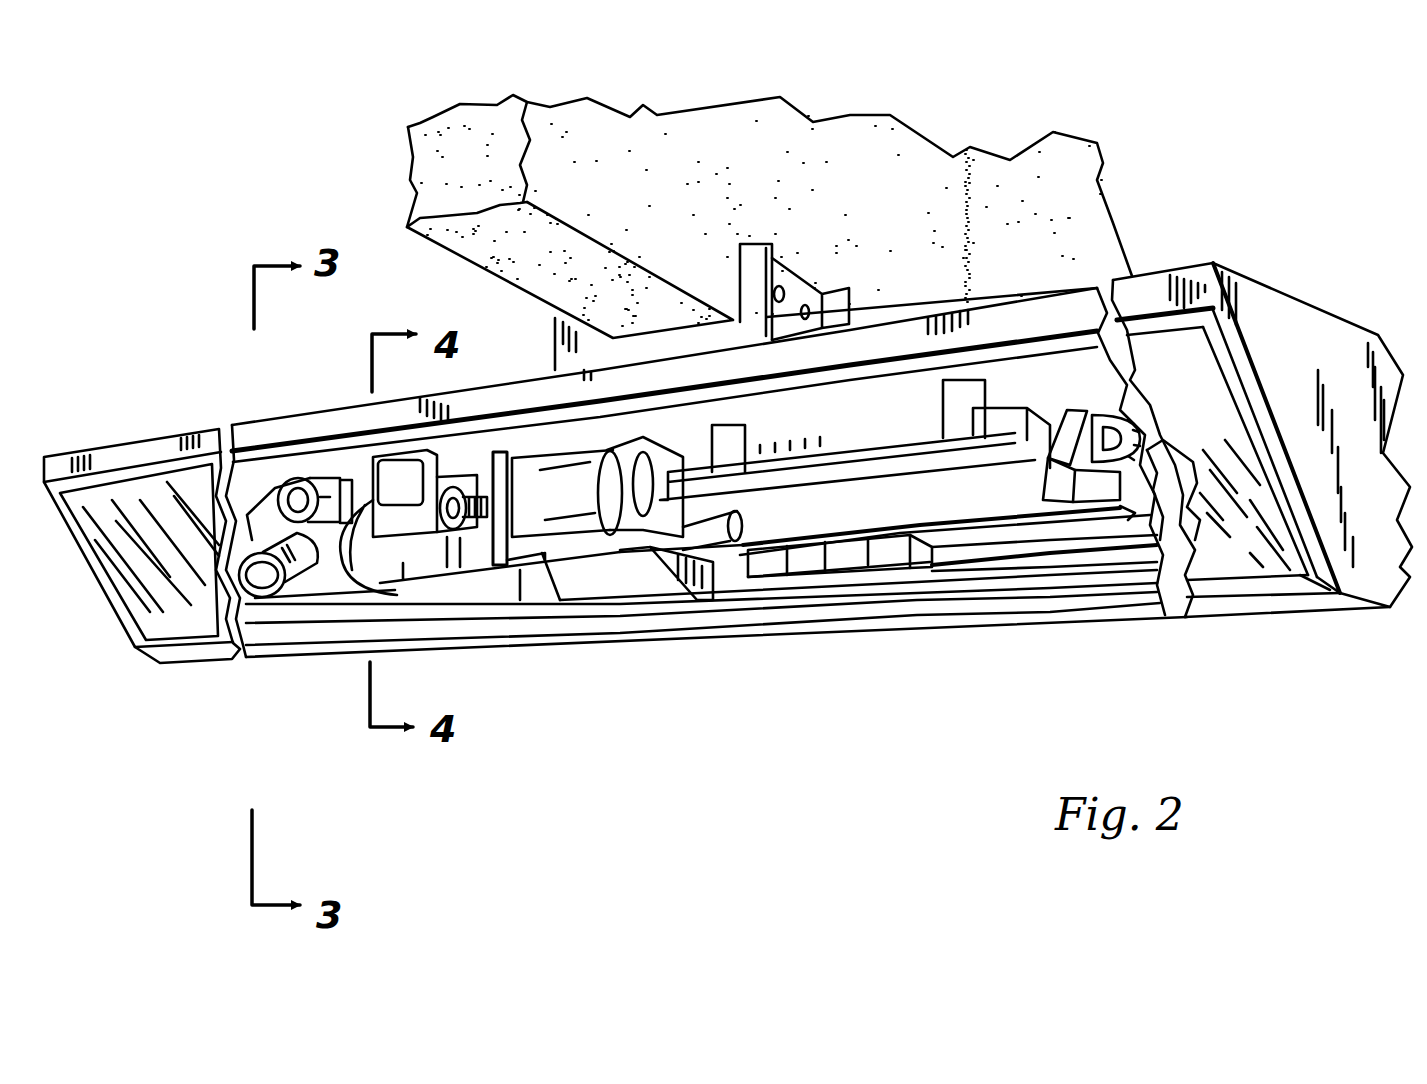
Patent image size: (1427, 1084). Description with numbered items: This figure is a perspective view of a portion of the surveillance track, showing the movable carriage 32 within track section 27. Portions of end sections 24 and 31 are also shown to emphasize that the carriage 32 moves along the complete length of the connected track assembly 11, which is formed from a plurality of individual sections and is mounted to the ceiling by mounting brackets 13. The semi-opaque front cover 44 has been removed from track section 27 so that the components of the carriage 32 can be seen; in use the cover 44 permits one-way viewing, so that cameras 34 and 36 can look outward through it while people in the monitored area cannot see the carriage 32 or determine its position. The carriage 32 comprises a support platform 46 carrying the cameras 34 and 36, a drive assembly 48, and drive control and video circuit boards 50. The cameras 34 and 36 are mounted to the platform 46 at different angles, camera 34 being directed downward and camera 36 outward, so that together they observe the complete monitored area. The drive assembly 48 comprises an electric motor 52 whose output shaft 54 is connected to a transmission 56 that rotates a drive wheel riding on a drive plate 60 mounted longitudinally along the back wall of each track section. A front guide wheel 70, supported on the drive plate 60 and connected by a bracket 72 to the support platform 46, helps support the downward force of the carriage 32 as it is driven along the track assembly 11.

The connected track assembly 11 is at (1389, 331).
The mounting brackets 13 is at (549, 332).
The end section 24 is at (93, 432).
The track section 27 is at (726, 654).
The end section 31 is at (1241, 258).
The movable carriage 32 is at (1014, 388).
The camera 34 is at (268, 507).
The camera 36 is at (355, 525).
The semi-opaque front cover 44 is at (1257, 557).
The support platform 46 is at (1080, 505).
The drive assembly 48 is at (518, 537).
The drive control and video circuit boards 50 is at (831, 431).
The electric motor 52 is at (587, 528).
The output shaft 54 is at (457, 470).
The transmission 56 is at (400, 467).
The drive plate 60 is at (1148, 458).
The front guide wheel 70 is at (1132, 425).
The bracket 72 is at (1071, 412).